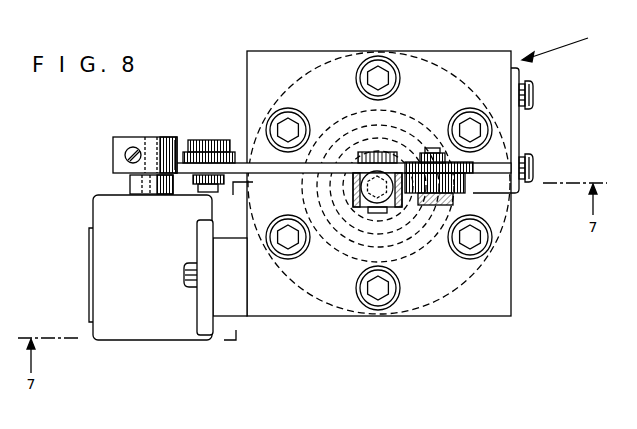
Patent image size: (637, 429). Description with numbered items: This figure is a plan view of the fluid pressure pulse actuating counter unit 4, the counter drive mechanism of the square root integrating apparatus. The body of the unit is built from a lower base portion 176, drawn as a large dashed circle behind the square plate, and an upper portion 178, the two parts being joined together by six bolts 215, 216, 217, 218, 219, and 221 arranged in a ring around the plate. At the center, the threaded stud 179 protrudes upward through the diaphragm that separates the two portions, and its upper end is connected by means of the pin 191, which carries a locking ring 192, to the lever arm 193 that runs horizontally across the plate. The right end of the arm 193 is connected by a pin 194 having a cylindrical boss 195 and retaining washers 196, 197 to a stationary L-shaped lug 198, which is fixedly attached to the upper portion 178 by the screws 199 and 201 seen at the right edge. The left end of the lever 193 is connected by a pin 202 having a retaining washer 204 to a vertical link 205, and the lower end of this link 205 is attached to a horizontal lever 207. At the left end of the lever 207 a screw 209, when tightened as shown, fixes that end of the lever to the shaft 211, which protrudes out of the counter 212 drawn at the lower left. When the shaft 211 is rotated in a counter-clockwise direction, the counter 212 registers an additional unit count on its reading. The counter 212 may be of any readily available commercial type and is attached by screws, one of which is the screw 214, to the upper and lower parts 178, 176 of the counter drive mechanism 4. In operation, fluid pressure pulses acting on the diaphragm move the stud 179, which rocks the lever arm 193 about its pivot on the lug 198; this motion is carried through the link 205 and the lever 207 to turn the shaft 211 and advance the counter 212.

The fluid pressure pulse actuating counter unit 4 is at (563, 42).
The lower base portion 176 is at (456, 70).
The upper portion 178 is at (310, 62).
The threaded stud 179 is at (374, 190).
The pin 191 is at (388, 152).
The locking ring 192 is at (363, 200).
The lever arm 193 is at (295, 168).
The pin 194 is at (432, 206).
The cylindrical boss 195 is at (466, 185).
The retaining washer 196 is at (458, 159).
The retaining washer 197 is at (423, 150).
The stationary L-shaped lug 198 is at (519, 136).
The screw 199 is at (533, 92).
The screw 201 is at (533, 170).
The pin 202 is at (214, 146).
The retaining washer 204 is at (214, 184).
The vertical link 205 is at (204, 153).
The horizontal lever 207 is at (177, 164).
The screw 209 is at (131, 150).
The shaft 211 is at (132, 178).
The counter 212 is at (103, 268).
The screw 214 is at (184, 272).
The bolt 215 is at (287, 112).
The bolt 216 is at (378, 57).
The bolt 217 is at (470, 112).
The bolt 218 is at (468, 250).
The bolt 219 is at (380, 304).
The bolt 221 is at (288, 250).